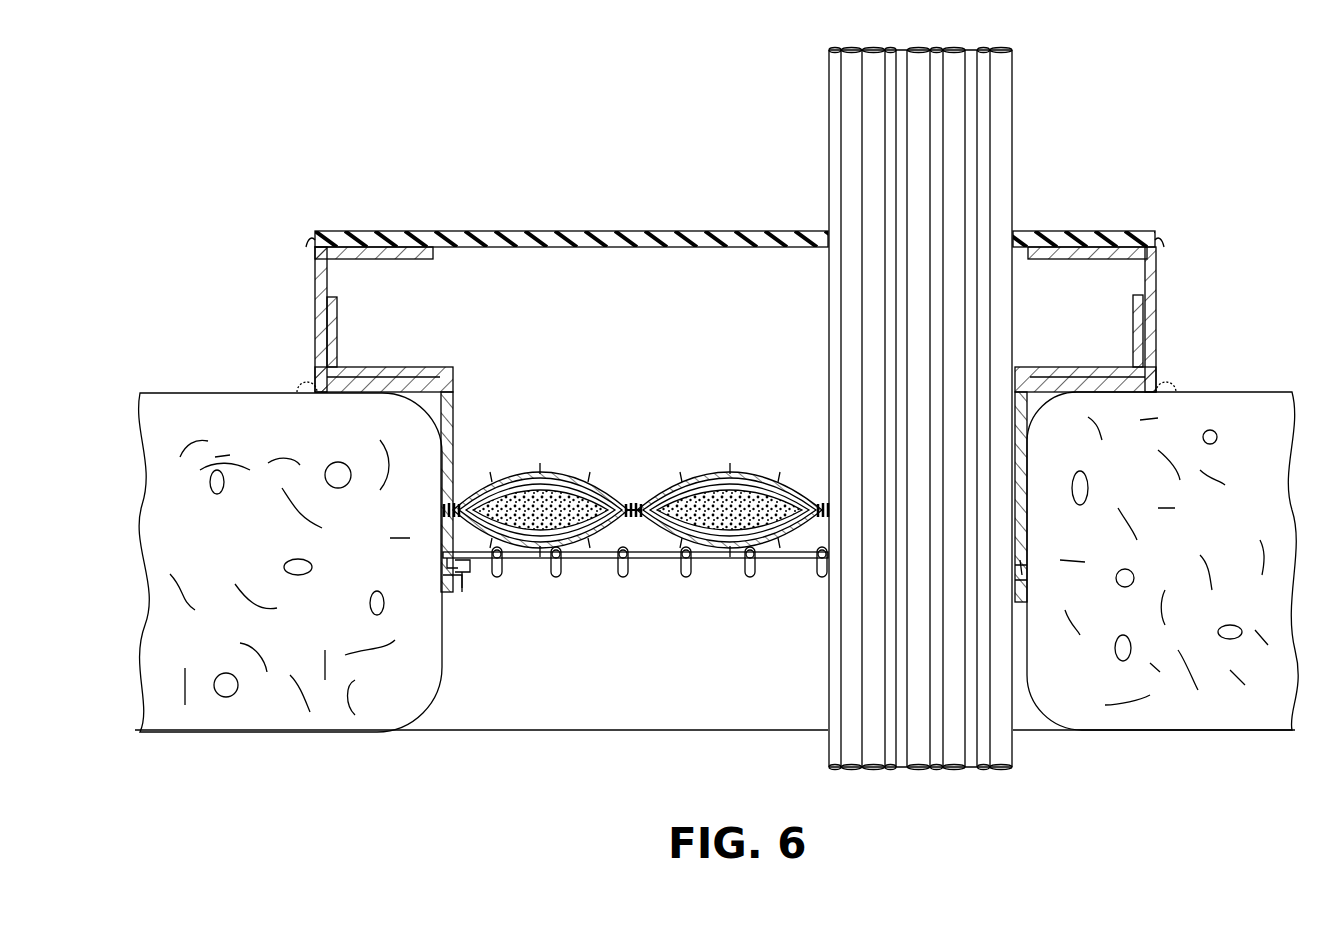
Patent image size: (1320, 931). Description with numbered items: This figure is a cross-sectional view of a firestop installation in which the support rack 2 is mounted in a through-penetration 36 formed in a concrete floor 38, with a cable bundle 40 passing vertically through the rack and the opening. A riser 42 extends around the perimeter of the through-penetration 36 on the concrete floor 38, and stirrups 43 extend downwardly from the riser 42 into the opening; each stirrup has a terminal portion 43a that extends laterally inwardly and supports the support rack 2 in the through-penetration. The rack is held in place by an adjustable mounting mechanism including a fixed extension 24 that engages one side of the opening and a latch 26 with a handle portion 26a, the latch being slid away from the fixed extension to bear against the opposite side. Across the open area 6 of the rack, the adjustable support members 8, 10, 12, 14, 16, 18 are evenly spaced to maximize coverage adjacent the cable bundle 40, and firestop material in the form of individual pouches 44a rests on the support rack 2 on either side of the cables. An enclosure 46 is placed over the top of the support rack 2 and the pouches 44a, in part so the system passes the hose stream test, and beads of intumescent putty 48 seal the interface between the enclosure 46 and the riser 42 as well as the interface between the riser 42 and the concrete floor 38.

The support rack 2 is at (588, 565).
The open area 6 is at (699, 361).
The adjustable support member 8 is at (497, 565).
The adjustable support member 10 is at (553, 562).
The adjustable support member 12 is at (622, 562).
The adjustable support member 14 is at (686, 562).
The adjustable support member 16 is at (750, 562).
The adjustable support member 18 is at (822, 562).
The fixed extension 24 is at (1020, 600).
The latch 26 is at (470, 590).
The handle portion 26a is at (637, 495).
The through-penetration 36 is at (665, 730).
The concrete floor 38 is at (235, 405).
The cable bundle 40 is at (935, 48).
The riser 42 is at (320, 300).
The stirrup 43 is at (337, 350).
The terminal portion 43a is at (462, 578).
The pouch 44a is at (541, 470).
The enclosure 46 is at (1095, 233).
The intumescent putty 48 is at (312, 244).